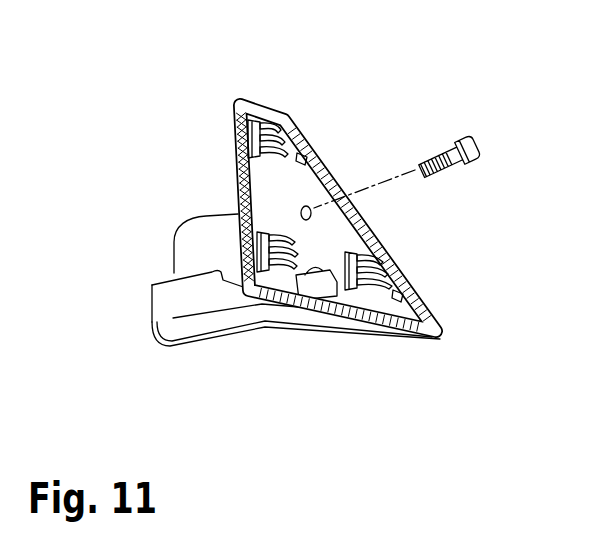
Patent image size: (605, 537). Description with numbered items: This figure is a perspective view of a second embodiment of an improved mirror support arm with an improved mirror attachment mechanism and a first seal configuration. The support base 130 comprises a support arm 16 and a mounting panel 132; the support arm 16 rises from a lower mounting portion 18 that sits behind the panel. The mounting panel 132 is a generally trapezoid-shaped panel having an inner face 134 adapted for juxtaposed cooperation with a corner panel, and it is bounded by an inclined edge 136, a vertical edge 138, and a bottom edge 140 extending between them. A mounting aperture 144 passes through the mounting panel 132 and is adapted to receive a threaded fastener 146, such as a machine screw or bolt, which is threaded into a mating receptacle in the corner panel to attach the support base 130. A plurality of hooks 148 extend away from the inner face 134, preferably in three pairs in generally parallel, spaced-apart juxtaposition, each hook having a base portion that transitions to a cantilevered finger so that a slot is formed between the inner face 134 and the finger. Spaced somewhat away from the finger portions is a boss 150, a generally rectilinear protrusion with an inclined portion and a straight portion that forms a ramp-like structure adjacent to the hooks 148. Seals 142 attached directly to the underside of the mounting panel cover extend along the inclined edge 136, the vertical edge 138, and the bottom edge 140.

The support arm 16 is at (168, 305).
The cylindrical support 18 is at (186, 242).
The support base 130 is at (327, 220).
The mounting panel 132 is at (292, 113).
The inner face 134 is at (407, 293).
The inclined edge 136 is at (393, 268).
The vertical edge 138 is at (235, 152).
The bottom edge 140 is at (370, 295).
The seals 142 is at (237, 100).
The mounting aperture 144 is at (300, 212).
The threaded fastener 146 is at (461, 137).
The hooks 148 is at (271, 128).
The boss 150 is at (306, 152).